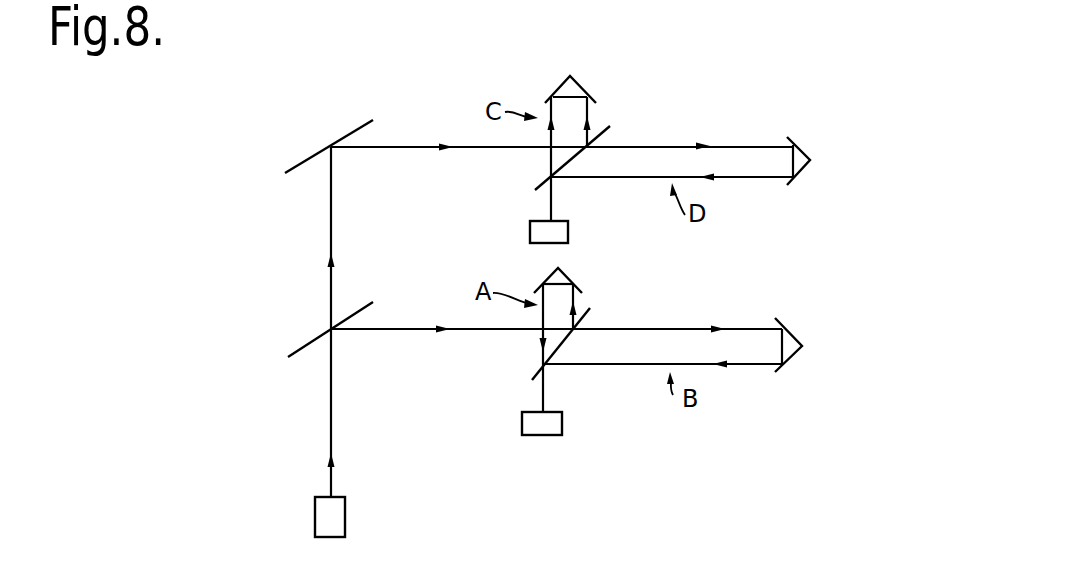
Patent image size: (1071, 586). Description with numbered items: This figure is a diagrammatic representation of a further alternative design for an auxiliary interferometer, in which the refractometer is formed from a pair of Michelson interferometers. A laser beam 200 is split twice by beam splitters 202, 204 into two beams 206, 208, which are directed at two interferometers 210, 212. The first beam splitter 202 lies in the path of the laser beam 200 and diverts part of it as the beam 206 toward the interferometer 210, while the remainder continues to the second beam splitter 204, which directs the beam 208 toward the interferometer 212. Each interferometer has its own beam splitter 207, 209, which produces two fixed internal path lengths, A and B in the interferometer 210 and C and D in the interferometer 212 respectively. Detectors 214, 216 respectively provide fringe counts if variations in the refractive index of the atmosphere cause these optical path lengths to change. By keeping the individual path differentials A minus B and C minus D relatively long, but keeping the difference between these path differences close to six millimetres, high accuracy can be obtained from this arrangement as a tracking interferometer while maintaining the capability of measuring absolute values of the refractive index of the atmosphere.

The laser beam 200 is at (331, 418).
The beam splitter 202 is at (298, 348).
The beam splitter 204 is at (300, 165).
The beam 206 is at (408, 330).
The beam splitter 207 is at (560, 347).
The beam 208 is at (410, 148).
The beam splitter 209 is at (572, 160).
The interferometer 210 is at (680, 311).
The interferometer 212 is at (706, 118).
The detector 214 is at (522, 423).
The detector 216 is at (530, 236).